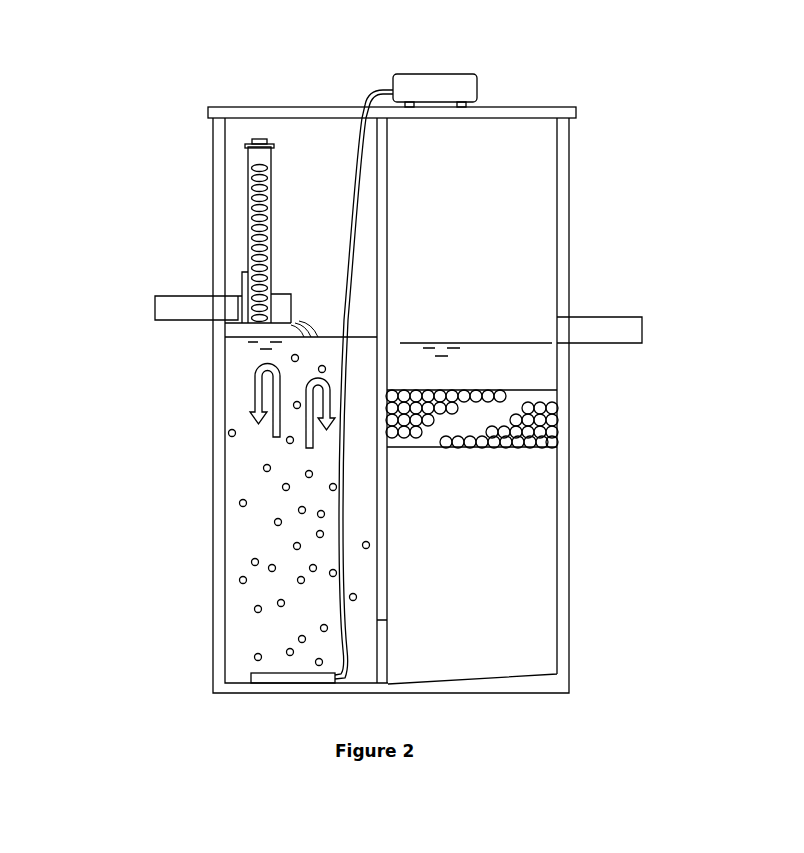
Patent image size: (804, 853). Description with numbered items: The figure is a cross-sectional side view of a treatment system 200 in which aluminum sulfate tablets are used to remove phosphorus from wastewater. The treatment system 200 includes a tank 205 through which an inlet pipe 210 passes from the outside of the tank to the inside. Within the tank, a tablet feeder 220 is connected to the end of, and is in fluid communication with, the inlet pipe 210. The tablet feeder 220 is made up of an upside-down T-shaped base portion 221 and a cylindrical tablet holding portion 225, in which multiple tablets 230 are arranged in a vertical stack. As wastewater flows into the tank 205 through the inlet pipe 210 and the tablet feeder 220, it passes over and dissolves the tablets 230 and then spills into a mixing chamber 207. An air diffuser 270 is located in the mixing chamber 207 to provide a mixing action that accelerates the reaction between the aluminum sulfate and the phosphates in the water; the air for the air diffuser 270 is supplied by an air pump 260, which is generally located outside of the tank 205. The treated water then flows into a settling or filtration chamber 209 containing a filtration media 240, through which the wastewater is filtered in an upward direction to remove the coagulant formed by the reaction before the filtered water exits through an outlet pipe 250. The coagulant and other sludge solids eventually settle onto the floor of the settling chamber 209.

The treatment system 200 is at (101, 77).
The tank 205 is at (213, 202).
The mixing chamber 207 is at (236, 557).
The settling or filtration chamber 209 is at (518, 598).
The inlet pipe 210 is at (198, 300).
The tablet feeder 220 is at (240, 323).
The T-shaped base portion 221 is at (284, 294).
The cylindrical tablet holding portion 225 is at (272, 178).
The tablets 230 is at (266, 221).
The filtration media 240 is at (558, 431).
The outlet pipe 250 is at (592, 331).
The air pump 260 is at (394, 76).
The air diffuser 270 is at (251, 676).